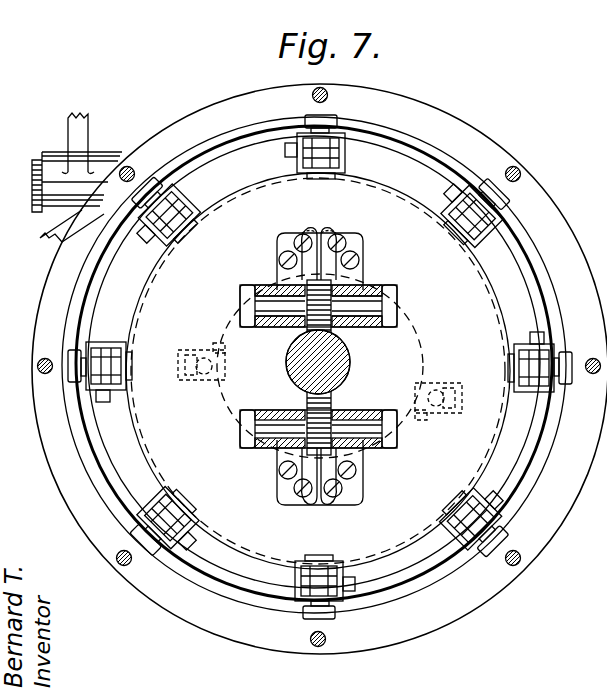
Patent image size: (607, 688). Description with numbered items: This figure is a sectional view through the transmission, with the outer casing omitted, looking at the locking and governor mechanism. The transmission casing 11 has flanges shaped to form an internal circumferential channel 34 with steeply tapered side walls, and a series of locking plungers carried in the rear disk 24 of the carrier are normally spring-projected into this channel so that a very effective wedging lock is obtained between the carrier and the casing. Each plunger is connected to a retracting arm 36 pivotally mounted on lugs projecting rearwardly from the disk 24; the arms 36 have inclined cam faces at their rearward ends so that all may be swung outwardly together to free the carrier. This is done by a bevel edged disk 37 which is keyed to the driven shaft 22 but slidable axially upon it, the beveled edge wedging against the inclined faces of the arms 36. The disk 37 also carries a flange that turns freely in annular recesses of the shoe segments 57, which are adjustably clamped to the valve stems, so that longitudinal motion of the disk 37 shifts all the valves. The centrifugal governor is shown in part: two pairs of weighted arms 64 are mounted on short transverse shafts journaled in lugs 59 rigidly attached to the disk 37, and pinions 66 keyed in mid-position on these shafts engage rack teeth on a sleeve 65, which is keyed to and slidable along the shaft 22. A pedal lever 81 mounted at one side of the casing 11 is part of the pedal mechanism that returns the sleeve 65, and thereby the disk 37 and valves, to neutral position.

The transmission casing 11 is at (395, 99).
The rear disk of the carrier 24 is at (422, 173).
The bevel edged disk 37 is at (483, 272).
The internal circumferential channel 34 is at (152, 188).
The retracting arm 36 is at (320, 152).
The pedal lever 81 is at (72, 128).
The lugs 59 is at (287, 238).
The shoe segments 57 is at (315, 233).
The weighted arms 64 is at (353, 297).
The pinions 66 is at (348, 283).
The sleeve 65 is at (343, 384).
The driven shaft 22 is at (333, 364).